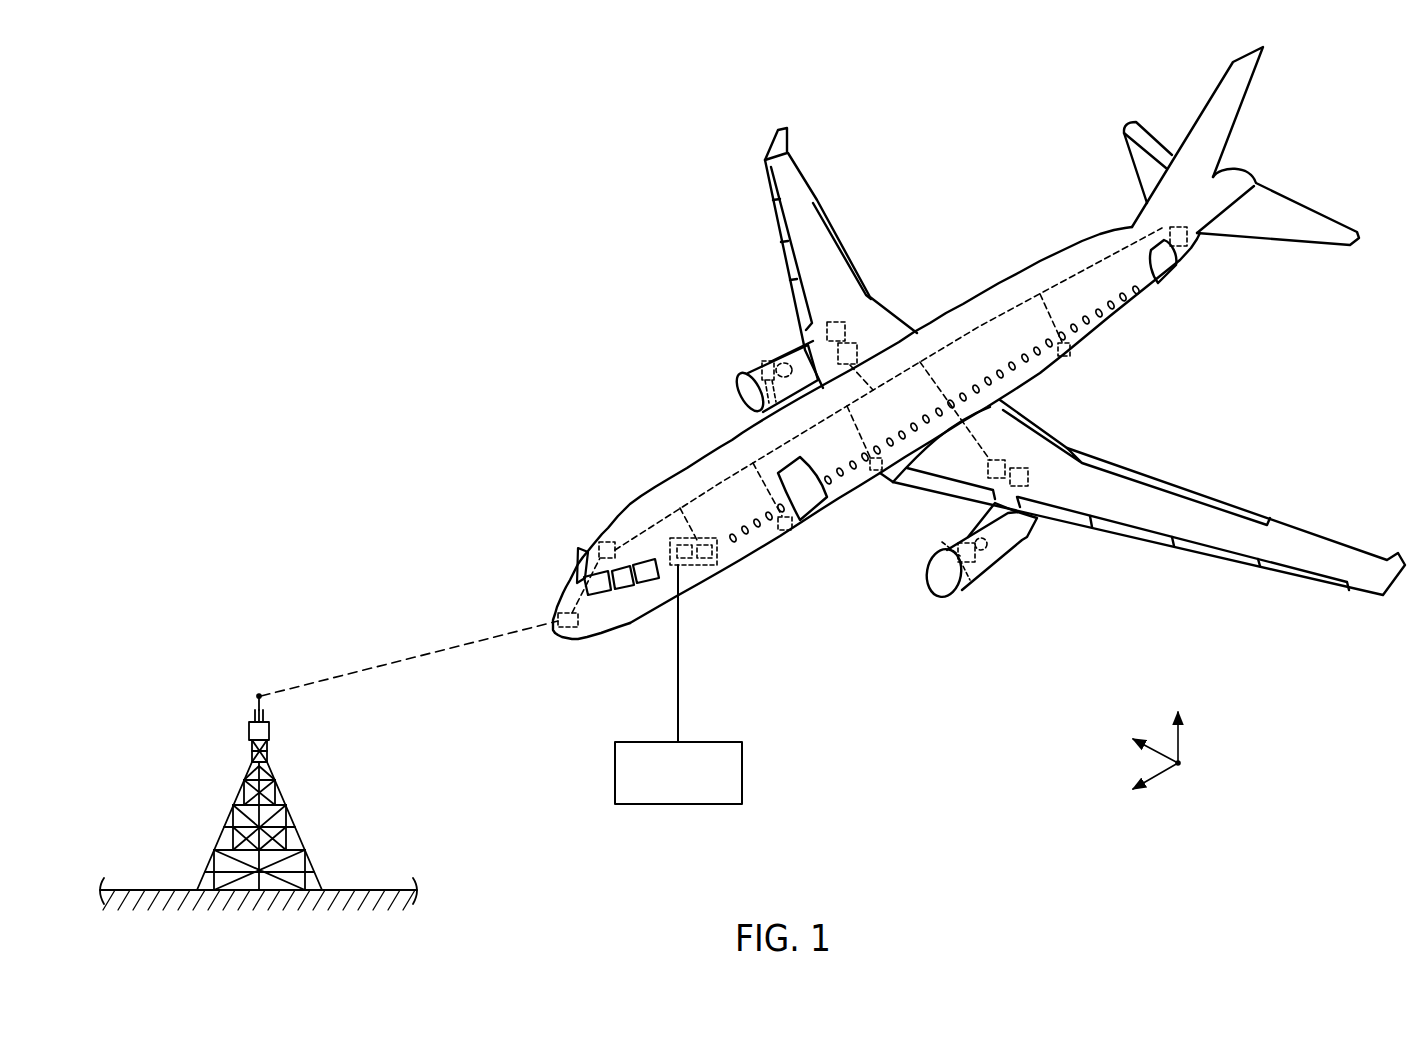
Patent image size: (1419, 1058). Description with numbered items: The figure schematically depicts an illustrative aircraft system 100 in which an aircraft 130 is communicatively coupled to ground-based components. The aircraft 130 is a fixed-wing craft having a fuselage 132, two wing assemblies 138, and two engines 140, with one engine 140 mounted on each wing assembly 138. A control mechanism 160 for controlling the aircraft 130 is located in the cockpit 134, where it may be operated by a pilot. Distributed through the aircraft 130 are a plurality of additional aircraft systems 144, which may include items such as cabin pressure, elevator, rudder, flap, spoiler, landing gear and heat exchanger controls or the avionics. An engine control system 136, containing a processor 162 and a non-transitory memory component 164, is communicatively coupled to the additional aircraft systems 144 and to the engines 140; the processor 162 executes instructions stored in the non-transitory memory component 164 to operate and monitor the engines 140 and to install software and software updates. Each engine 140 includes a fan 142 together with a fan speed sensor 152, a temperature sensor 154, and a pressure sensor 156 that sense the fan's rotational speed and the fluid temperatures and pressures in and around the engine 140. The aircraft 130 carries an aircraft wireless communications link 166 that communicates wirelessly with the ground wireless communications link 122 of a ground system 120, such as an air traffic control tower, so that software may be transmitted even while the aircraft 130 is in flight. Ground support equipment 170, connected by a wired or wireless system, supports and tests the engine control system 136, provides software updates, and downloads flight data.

The aircraft system 100 is at (618, 212).
The ground system 120 is at (310, 820).
The ground wireless communications link 122 is at (262, 694).
The aircraft 130 is at (548, 586).
The fuselage 132 is at (1003, 277).
The cockpit 134 is at (586, 548).
The engine control system 136 is at (697, 538).
The wing assembly 138 is at (792, 178).
The engine 140 is at (735, 399).
The fan 142 is at (736, 374).
The additional aircraft systems 144 is at (786, 531).
The fan speed sensor 152 is at (764, 362).
The temperature sensor 154 is at (850, 343).
The pressure sensor 156 is at (830, 322).
The control mechanism 160 is at (600, 543).
The processor 162 is at (718, 565).
The non-transitory memory component 164 is at (683, 565).
The aircraft wireless communications link 166 is at (570, 627).
The ground support equipment 170 is at (645, 741).